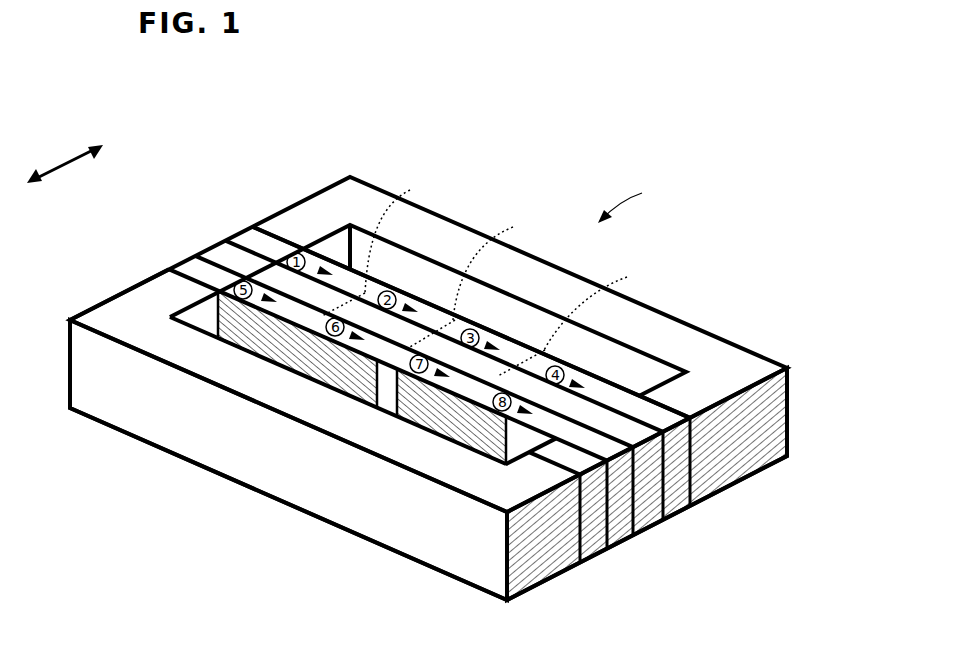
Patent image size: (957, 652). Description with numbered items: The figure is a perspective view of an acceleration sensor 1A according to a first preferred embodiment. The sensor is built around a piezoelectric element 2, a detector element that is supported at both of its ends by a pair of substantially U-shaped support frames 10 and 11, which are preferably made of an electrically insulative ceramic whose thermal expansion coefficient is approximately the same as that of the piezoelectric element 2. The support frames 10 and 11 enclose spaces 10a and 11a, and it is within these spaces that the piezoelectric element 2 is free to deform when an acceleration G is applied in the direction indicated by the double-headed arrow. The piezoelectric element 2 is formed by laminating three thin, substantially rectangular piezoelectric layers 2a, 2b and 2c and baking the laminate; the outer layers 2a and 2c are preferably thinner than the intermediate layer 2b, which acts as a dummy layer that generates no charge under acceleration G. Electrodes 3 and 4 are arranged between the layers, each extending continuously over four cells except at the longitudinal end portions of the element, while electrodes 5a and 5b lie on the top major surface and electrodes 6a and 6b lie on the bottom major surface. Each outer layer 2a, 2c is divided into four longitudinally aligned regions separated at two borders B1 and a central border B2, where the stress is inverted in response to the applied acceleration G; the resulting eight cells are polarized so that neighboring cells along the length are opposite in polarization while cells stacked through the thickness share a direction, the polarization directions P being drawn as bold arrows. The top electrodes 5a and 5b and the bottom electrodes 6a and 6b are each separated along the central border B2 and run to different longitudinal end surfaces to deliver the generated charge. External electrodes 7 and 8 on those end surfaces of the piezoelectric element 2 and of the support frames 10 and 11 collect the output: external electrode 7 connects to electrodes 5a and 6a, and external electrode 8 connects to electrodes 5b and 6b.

The acceleration sensor 1A is at (638, 200).
The piezoelectric element 2 is at (392, 333).
The piezoelectric layer 2a is at (247, 240).
The intermediate layer 2b is at (220, 250).
The piezoelectric layer 2c is at (190, 263).
The electrode 3 is at (342, 280).
The electrode 4 is at (222, 335).
The top major surface electrode 5a is at (295, 240).
The top major surface electrode 5b is at (628, 388).
The bottom major surface electrode 6a is at (315, 372).
The bottom major surface electrode 6b is at (455, 432).
The external electrode 7 is at (103, 303).
The external electrode 8 is at (727, 472).
The support frame 10 is at (448, 220).
The space 10a is at (627, 348).
The support frame 11 is at (283, 478).
The space 11a is at (270, 350).
The border B1 is at (489, 270).
The central border B2 is at (481, 280).
The polarization direction P is at (487, 352).
The acceleration G is at (65, 162).